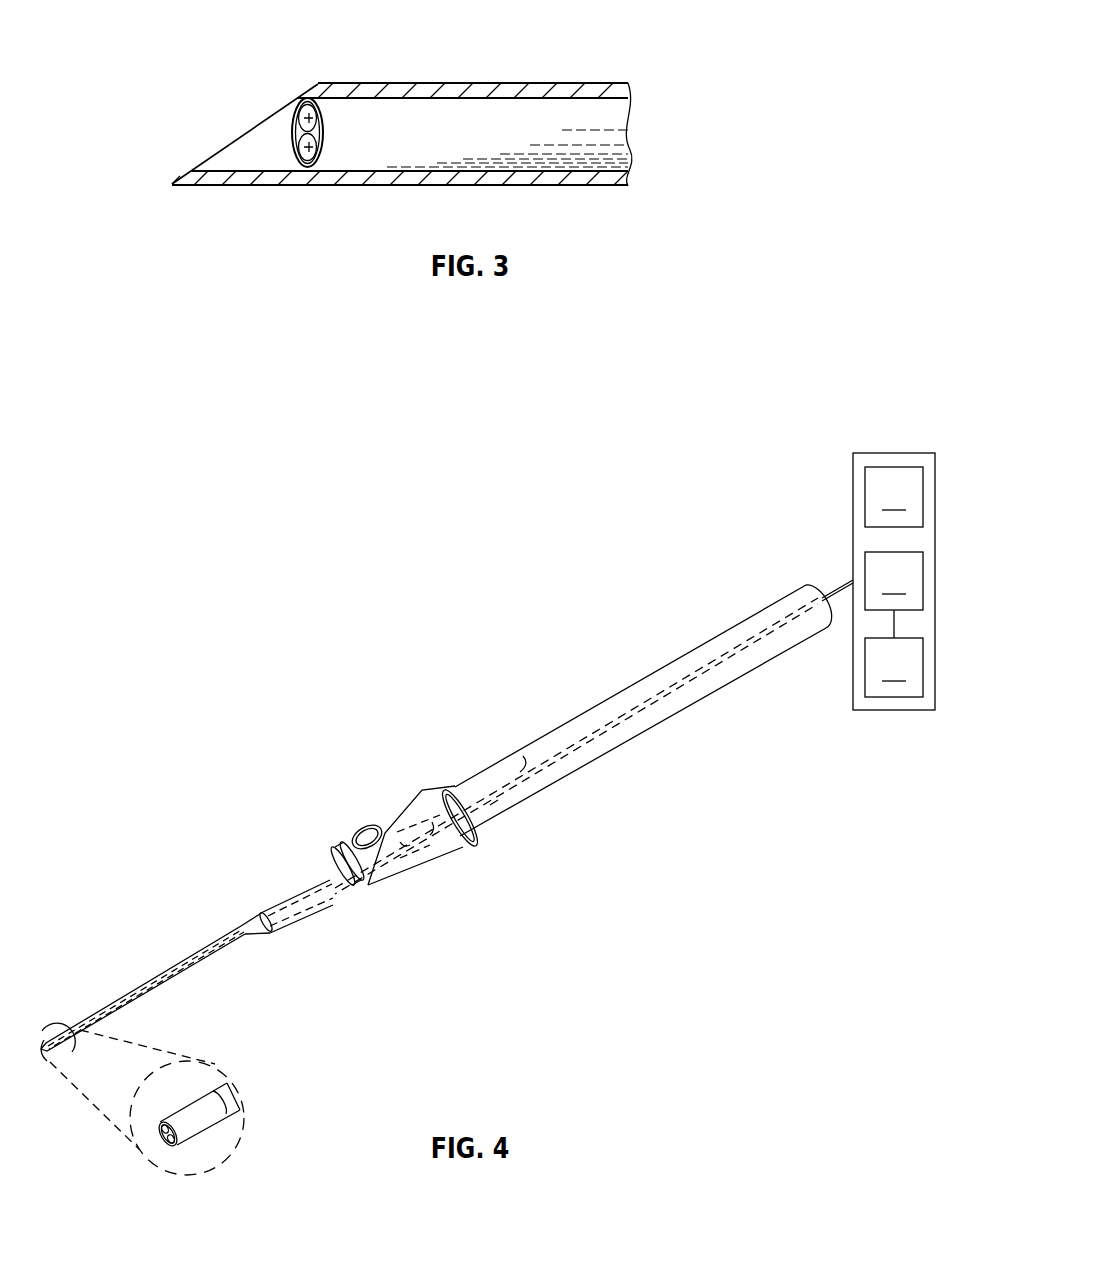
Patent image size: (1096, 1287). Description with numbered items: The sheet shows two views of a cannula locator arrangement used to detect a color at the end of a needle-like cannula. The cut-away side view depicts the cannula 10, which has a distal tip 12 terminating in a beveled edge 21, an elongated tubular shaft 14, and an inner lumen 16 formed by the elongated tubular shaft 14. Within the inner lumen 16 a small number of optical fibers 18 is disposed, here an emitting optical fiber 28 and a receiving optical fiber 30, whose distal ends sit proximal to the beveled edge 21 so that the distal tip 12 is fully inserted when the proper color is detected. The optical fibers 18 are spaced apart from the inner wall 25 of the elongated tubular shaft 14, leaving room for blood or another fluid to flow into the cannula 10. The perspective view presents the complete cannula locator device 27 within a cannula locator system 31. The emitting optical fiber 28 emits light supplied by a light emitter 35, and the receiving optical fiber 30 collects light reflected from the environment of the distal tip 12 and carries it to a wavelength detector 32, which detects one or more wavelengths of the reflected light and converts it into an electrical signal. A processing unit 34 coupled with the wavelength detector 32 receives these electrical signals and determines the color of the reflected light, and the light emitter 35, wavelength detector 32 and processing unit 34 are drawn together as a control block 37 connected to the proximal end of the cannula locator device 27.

In FIG. 3, the cannula 10 is at (380, 101).
In FIG. 4, the cannula 10 is at (283, 918).
In FIG. 3, the distal tip 12 is at (172, 184).
In FIG. 4, the distal tip 12 is at (43, 1058).
In FIG. 3, the elongated tubular shaft 14 is at (409, 106).
In FIG. 3, the inner lumen 16 is at (213, 163).
In FIG. 4, the optical fibers 18 is at (612, 712).
In FIG. 3, the beveled edge 21 is at (285, 96).
In FIG. 3, the inner wall 25 is at (539, 90).
In FIG. 4, the cannula locator device 27 is at (392, 800).
In FIG. 3, the emitting optical fiber 28 is at (298, 146).
In FIG. 4, the emitting optical fiber 28 is at (173, 1142).
In FIG. 3, the receiving optical fiber 30 is at (299, 118).
In FIG. 4, the receiving optical fiber 30 is at (160, 1132).
In FIG. 4, the cannula locator system 31 is at (488, 821).
In FIG. 4, the wavelength detector 32 is at (894, 581).
In FIG. 4, the processor 34 is at (894, 667).
In FIG. 4, the light emitter 35 is at (894, 497).
In FIG. 4, the control unit 37 is at (878, 565).